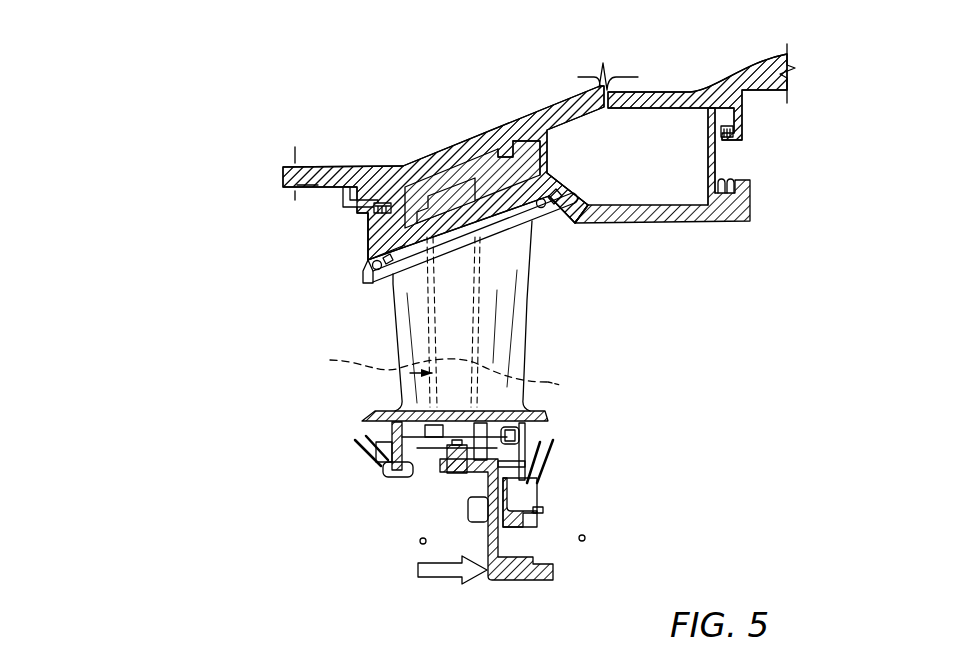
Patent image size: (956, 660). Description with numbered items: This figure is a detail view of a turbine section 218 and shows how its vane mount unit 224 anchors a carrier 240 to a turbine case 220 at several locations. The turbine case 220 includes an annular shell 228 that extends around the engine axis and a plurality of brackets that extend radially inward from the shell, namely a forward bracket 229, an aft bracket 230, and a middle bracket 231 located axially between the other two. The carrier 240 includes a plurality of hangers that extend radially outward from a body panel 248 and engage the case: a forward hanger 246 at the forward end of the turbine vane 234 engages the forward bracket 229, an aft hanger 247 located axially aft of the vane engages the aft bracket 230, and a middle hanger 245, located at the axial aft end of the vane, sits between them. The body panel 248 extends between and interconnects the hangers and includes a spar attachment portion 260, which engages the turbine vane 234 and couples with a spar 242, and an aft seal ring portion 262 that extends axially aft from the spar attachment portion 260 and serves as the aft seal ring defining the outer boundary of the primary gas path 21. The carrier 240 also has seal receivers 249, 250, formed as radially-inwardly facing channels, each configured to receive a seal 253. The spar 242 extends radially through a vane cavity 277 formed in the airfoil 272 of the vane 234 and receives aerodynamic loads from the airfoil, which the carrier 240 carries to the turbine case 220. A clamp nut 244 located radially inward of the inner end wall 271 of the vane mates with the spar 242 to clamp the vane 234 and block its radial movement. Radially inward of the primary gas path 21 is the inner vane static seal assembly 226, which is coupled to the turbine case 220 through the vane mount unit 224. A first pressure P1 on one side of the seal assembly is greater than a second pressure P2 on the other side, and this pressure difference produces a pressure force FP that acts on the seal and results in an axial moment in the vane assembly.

The turbine section 218 is at (155, 130).
The turbine case 220 is at (497, 108).
The vane mount unit 224 is at (428, 198).
The inner vane static seal assembly 226 is at (383, 512).
The annular shell 228 is at (508, 120).
The forward bracket 229 is at (350, 190).
The aft bracket 230 is at (743, 118).
The middle bracket 231 is at (470, 146).
The turbine vane 234 is at (572, 331).
The carrier 240 is at (626, 200).
The spar 242 is at (415, 364).
The clamp nut 244 is at (440, 465).
The middle hanger 245 is at (552, 156).
The forward hanger 246 is at (364, 261).
The aft hanger 247 is at (737, 155).
The body panel 248 is at (695, 228).
The seal receiver 249 is at (358, 268).
The seal receiver 250 is at (578, 220).
The seal 253 is at (379, 220).
The spar attachment portion 260 is at (523, 196).
The aft seal ring portion 262 is at (662, 205).
The inner end wall 271 is at (550, 430).
The airfoil 272 is at (538, 293).
The vane cavity 277 is at (578, 382).
The primary gas path 21 is at (302, 397).
The first pressure P1 is at (420, 543).
The second pressure P2 is at (586, 540).
The pressure force FP is at (437, 581).